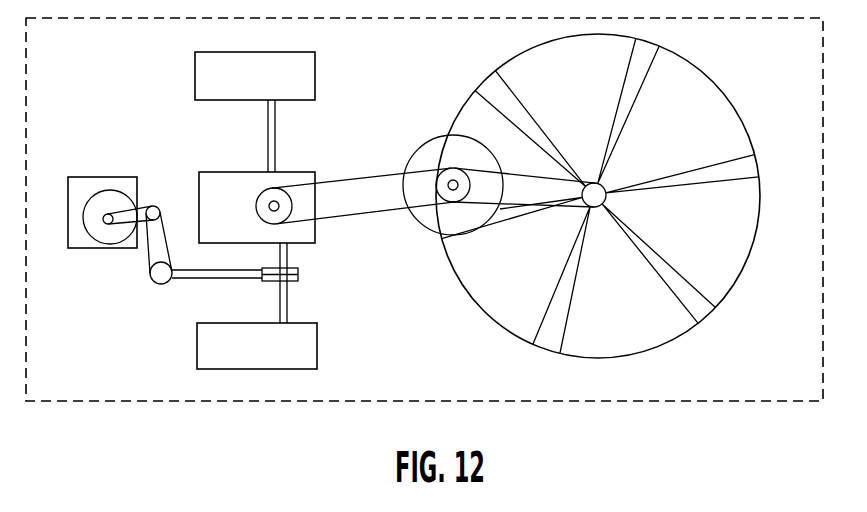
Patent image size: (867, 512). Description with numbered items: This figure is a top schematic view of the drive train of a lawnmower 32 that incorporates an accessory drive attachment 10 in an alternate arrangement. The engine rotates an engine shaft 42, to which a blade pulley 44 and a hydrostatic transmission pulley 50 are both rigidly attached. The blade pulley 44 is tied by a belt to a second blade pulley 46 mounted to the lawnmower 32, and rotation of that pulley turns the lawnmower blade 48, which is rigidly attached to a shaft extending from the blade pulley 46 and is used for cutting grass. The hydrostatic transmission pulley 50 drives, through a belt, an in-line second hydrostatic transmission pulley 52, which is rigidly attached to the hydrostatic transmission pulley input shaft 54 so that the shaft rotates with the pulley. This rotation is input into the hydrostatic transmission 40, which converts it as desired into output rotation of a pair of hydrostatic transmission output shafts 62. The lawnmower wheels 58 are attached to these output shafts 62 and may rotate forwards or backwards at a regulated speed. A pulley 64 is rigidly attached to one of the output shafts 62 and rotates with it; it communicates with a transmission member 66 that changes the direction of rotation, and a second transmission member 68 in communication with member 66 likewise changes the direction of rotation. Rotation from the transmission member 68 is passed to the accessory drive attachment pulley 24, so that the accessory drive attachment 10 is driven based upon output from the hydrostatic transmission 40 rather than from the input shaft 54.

The accessory drive attachment 10 is at (98, 177).
The accessory drive attachment pulley 24 is at (102, 228).
The second transmission member 68 is at (153, 205).
The transmission member 66 is at (155, 283).
The pulley 64 is at (262, 278).
The hydrostatic transmission 40 is at (227, 223).
The hydrostatic transmission pulley input shaft 54 is at (261, 197).
The second hydrostatic transmission pulley 52 is at (266, 220).
The lawnmower wheels 58 is at (305, 70).
The hydrostatic transmission output shafts 62 is at (276, 134).
The blade pulley 44 is at (432, 148).
The engine shaft 42 is at (458, 187).
The hydrostatic transmission pulley 50 is at (443, 177).
The second blade pulley 46 is at (607, 197).
The lawnmower blade 48 is at (627, 115).
The lawnmower 32 is at (602, 403).